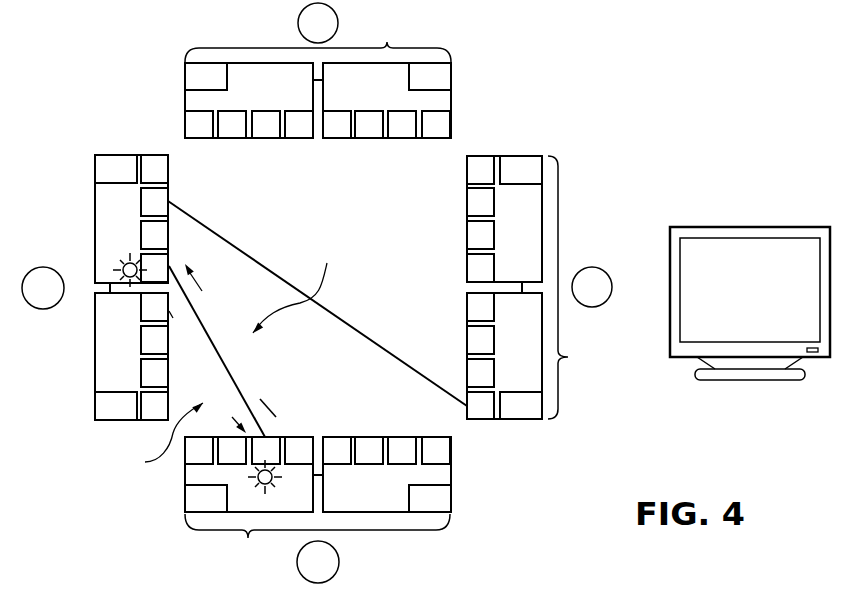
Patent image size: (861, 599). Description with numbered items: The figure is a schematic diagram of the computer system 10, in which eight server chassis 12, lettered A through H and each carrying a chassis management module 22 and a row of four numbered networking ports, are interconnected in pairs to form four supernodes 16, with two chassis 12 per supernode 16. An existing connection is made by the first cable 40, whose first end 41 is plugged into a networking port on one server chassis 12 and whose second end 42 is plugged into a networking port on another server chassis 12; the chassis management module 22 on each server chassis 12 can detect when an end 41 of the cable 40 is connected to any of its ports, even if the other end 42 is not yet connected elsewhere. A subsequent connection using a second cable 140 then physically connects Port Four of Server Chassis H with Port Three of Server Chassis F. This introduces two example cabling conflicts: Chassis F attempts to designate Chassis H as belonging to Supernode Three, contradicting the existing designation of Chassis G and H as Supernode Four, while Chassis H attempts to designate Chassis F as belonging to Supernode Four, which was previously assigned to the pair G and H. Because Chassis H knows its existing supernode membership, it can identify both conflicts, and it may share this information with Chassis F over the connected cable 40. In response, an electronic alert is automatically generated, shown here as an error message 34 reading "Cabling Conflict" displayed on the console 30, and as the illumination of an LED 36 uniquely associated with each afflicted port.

The computer system 10 is at (493, 118).
The server chassis 12 is at (141, 154).
The supernode 16 is at (88, 419).
The chassis management module 22 is at (97, 154).
The console 30 is at (712, 227).
The error message 34 is at (778, 248).
The LED 36 is at (116, 254).
The cable 40 is at (393, 353).
The first end 41 is at (172, 266).
The second end 42 is at (268, 436).
The second cable 140 is at (268, 408).